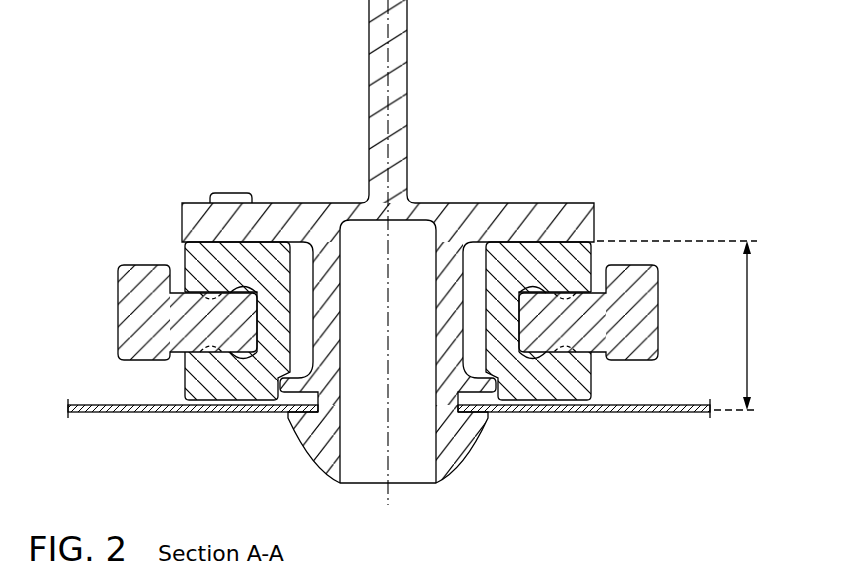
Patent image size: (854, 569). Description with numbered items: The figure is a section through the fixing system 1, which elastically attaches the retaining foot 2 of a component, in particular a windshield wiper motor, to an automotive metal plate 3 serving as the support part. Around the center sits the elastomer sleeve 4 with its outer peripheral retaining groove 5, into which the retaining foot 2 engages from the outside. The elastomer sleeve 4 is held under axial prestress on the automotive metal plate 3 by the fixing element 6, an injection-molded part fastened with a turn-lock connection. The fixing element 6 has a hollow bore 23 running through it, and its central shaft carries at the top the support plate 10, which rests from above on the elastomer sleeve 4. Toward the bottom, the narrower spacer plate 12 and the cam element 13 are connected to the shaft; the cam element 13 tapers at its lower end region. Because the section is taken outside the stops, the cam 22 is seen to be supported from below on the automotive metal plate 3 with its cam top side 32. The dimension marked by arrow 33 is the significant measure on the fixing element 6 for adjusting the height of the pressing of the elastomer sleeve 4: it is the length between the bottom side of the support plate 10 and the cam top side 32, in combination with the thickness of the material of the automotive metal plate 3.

The fixing system 1 is at (246, 118).
The retaining foot 2 is at (130, 276).
The automotive metal plate 3 is at (657, 411).
The elastomer sleeve 4 is at (192, 253).
The outer peripheral retaining groove 5 is at (175, 367).
The fixing element 6 is at (519, 72).
The support plate 10 is at (572, 218).
The spacer plate 12 is at (293, 388).
The cam element 13 is at (294, 476).
The cam 22 is at (464, 459).
The hollow bore 23 is at (418, 234).
The cam top side 32 is at (494, 424).
The height adjustment measure (arrow) 33 is at (756, 328).